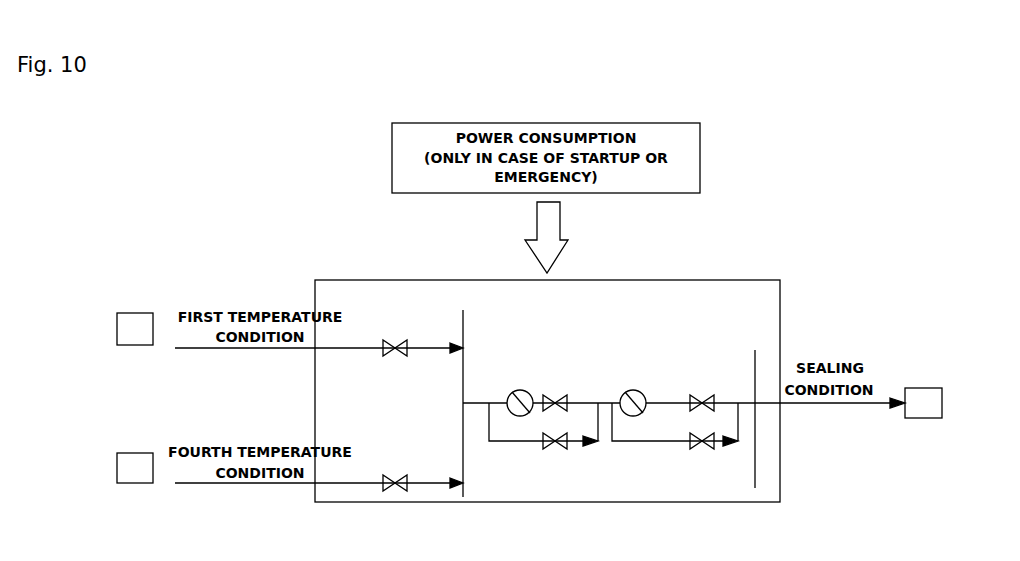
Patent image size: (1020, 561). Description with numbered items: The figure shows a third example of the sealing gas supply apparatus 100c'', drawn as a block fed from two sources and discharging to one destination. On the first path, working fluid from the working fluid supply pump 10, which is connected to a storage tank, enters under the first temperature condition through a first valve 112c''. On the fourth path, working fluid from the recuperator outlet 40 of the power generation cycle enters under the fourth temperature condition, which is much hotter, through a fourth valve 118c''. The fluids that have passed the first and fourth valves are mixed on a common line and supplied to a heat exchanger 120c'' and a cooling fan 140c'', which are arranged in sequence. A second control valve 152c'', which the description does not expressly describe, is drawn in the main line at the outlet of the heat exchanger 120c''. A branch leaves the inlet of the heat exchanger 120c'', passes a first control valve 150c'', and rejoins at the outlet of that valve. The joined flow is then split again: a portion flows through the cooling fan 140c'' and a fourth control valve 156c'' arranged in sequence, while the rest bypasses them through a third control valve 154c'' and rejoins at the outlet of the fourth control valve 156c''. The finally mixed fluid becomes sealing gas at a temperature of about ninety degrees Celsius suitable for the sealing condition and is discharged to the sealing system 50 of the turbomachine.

The working fluid supply pump 10 is at (135, 329).
The recuperator outlet 40 is at (135, 468).
The sealing system 50 is at (923, 403).
The sealing gas supply apparatus 100c'' is at (547, 391).
The first valve 112c'' is at (397, 336).
The fourth valve 118c'' is at (397, 472).
The heat exchanger 120c'' is at (517, 393).
The first compressor outlet valve 152c'' is at (568, 392).
The first control valve 150c'' is at (543, 437).
The cooling fan 140c'' is at (637, 393).
The fourth control valve 156c'' is at (704, 392).
The third control valve 154c'' is at (675, 437).